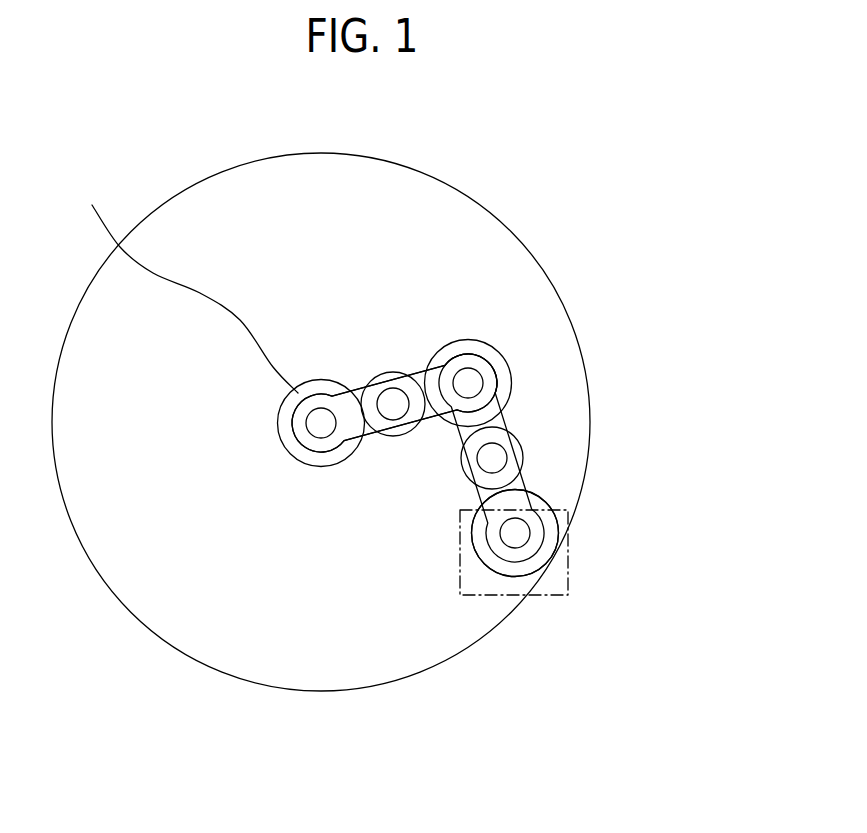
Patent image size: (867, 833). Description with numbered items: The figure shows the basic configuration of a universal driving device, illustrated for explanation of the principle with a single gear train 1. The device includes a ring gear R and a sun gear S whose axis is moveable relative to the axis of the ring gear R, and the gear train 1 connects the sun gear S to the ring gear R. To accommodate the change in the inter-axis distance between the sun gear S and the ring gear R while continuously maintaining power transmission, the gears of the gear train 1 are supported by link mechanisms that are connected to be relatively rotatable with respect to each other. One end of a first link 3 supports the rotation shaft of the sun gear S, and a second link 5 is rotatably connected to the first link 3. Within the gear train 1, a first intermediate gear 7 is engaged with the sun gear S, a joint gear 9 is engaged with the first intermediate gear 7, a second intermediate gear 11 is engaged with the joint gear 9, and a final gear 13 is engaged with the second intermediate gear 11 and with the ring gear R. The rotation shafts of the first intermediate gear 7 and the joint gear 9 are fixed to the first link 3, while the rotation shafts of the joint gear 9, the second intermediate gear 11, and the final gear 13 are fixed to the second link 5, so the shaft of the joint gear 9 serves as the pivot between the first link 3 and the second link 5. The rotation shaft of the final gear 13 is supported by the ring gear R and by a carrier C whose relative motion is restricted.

The gear train 1 is at (537, 363).
The first link 3 is at (343, 443).
The second link 5 is at (527, 492).
The first intermediate gear 7 is at (388, 373).
The joint gear 9 is at (483, 347).
The second intermediate gear 11 is at (523, 448).
The final gear 13 is at (537, 563).
The ring gear R is at (487, 212).
The sun gear S is at (185, 284).
The carrier C is at (568, 567).